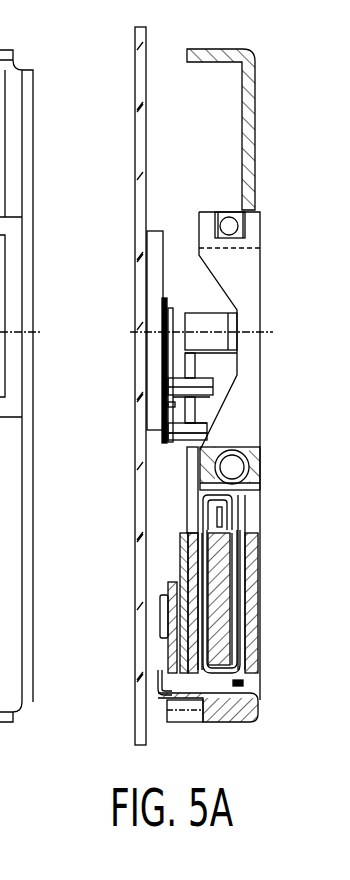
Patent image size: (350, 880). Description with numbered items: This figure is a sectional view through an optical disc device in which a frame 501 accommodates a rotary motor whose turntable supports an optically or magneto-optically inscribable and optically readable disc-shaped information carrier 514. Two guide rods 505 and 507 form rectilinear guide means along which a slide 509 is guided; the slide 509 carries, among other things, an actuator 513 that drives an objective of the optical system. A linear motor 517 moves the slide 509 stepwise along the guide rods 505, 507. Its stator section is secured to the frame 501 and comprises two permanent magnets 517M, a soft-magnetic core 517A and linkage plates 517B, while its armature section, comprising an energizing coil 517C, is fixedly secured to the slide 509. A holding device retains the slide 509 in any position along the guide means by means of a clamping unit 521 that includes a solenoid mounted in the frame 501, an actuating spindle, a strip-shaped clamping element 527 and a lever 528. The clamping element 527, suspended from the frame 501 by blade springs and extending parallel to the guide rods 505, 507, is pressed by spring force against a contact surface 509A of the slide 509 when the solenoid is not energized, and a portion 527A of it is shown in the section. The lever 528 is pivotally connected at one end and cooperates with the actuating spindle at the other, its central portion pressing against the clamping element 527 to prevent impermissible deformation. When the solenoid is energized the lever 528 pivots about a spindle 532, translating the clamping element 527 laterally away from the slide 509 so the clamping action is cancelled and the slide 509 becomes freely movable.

The frame 501 is at (248, 106).
The guide rod 505 is at (238, 447).
The guide rod 507 is at (243, 222).
The slide 509 is at (245, 266).
The contact surface 509A is at (178, 676).
The actuator 513 is at (215, 385).
The disc-shaped information carrier 514 is at (138, 96).
The linear motor 517 is at (211, 588).
The soft-magnetic core 517A is at (222, 566).
The linkage plates 517B is at (188, 570).
The energizing coil 517C is at (237, 670).
The permanent magnets 517M is at (183, 547).
The clamping unit 521 is at (214, 727).
The clamping element 527 is at (243, 706).
The bracket tab 527A is at (260, 693).
The lever 528 is at (160, 662).
The spindle 532 is at (165, 627).